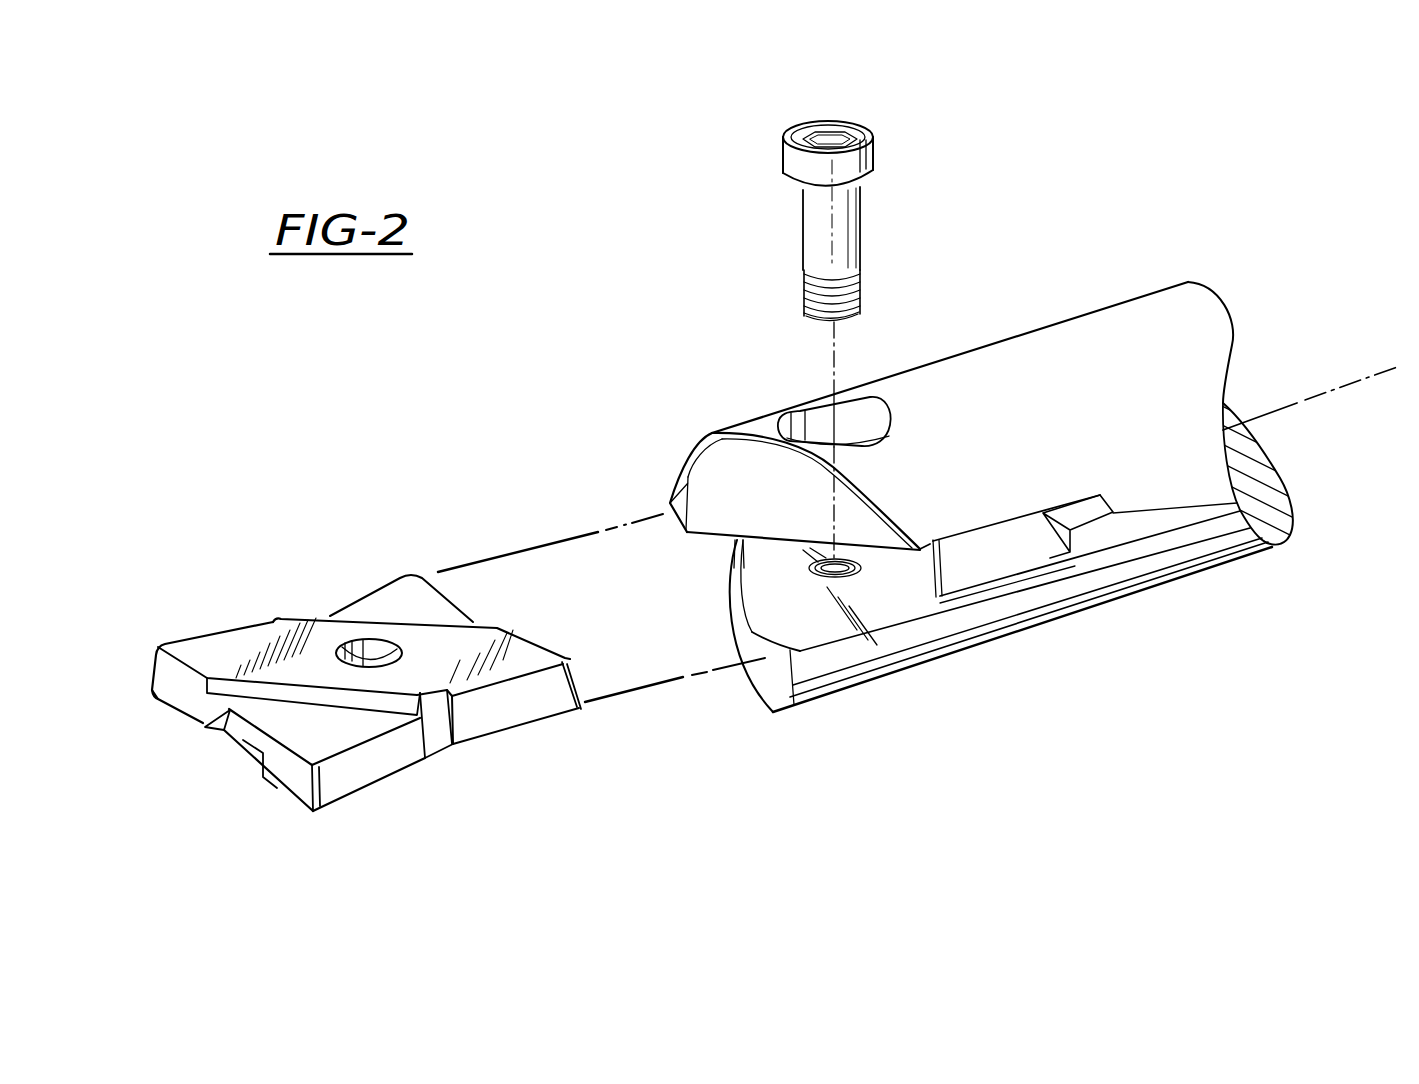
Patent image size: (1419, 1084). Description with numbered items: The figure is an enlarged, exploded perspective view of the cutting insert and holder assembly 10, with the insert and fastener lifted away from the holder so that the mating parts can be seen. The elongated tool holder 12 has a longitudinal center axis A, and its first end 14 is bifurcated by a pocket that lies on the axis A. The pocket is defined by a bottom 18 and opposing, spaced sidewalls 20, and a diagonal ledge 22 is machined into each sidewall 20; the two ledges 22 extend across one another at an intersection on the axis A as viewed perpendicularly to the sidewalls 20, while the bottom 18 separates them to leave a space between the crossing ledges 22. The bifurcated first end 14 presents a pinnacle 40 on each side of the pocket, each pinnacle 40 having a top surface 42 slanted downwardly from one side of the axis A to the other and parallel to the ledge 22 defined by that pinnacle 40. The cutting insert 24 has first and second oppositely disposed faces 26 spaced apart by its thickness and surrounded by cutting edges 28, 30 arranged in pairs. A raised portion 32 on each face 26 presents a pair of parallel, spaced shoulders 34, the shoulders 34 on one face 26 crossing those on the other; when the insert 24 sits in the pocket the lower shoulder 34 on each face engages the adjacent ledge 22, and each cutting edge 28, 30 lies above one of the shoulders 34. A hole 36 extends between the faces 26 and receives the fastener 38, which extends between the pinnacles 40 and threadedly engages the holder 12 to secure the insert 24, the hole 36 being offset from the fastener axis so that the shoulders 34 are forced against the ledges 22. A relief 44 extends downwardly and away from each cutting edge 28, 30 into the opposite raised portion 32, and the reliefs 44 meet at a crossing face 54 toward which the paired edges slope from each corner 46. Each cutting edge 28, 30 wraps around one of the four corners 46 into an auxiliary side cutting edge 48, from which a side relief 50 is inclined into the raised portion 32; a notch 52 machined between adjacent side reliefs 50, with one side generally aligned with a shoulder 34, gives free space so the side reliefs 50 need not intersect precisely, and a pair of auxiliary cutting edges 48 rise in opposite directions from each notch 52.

The cutting insert and holder assembly 10 is at (687, 323).
The tool holder 12 is at (1133, 597).
The first end 14 is at (1060, 322).
The bottom 18 is at (1058, 556).
The sidewalls 20 is at (810, 637).
The diagonal ledge 22 is at (930, 606).
The cutting insert 24 is at (238, 608).
The face 26 is at (337, 742).
The first cutting edge 28 is at (290, 790).
The second cutting edge 30 is at (160, 703).
The raised portion 32 is at (263, 630).
The shoulder 34 is at (380, 650).
The hole 36 is at (408, 576).
The fastener 38 is at (858, 224).
The pinnacle 40 is at (703, 433).
The top surface 42 is at (702, 482).
The relief 44 is at (150, 680).
The corner 46 is at (150, 676).
The auxiliary side cutting edge 48 is at (401, 770).
The side relief 50 is at (424, 772).
The notch 52 is at (433, 748).
The crossing face 54 is at (205, 727).
The longitudinal center axis A is at (1289, 406).